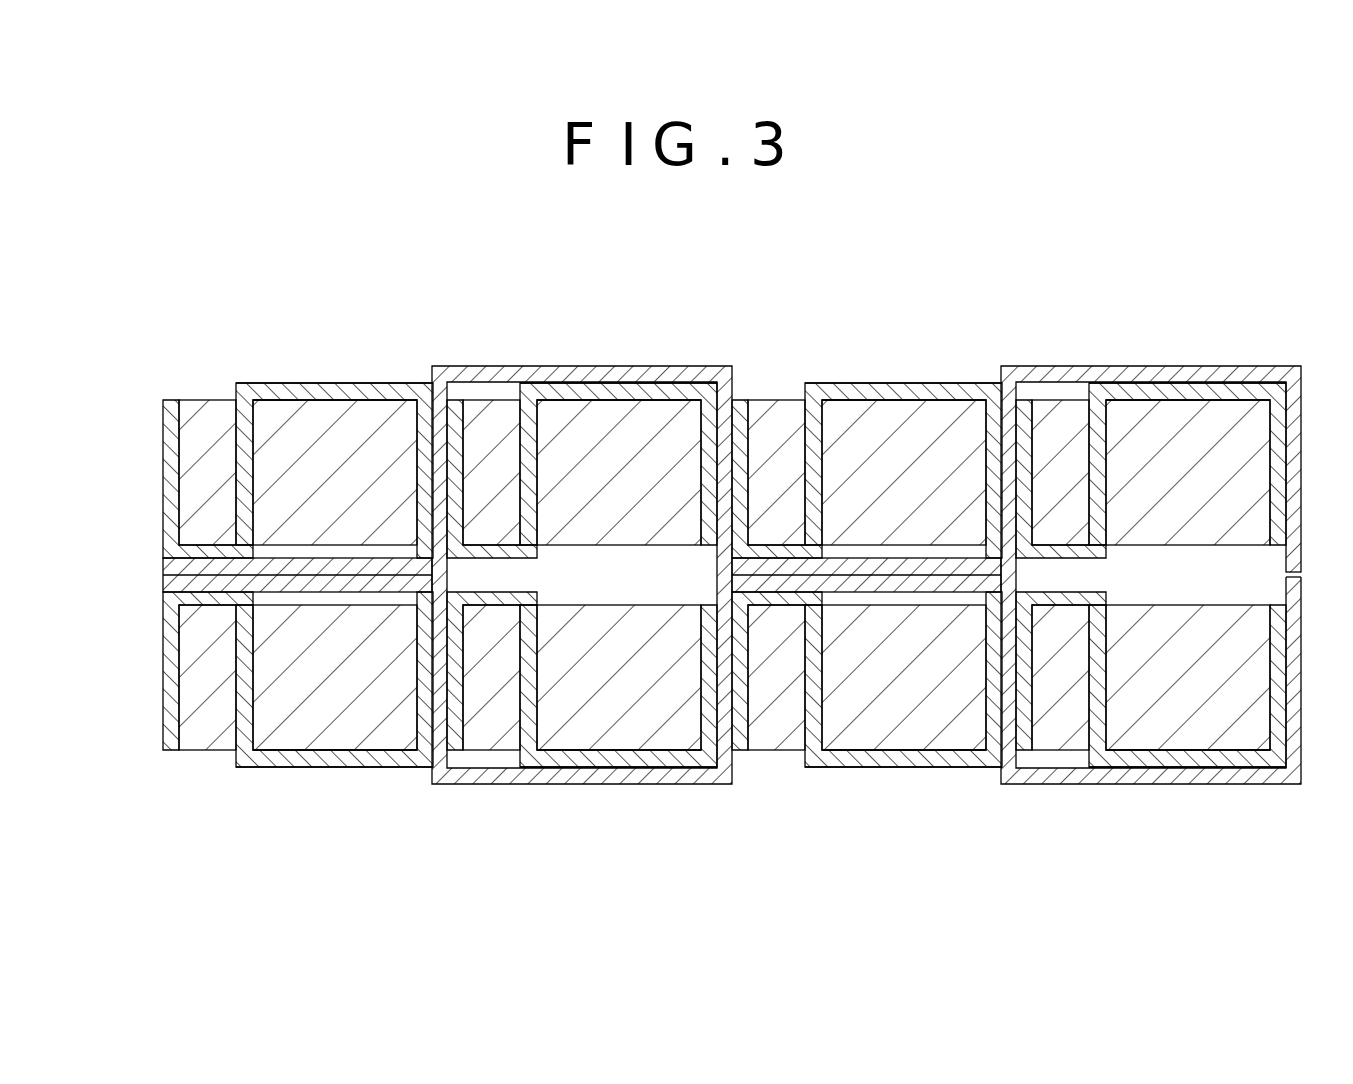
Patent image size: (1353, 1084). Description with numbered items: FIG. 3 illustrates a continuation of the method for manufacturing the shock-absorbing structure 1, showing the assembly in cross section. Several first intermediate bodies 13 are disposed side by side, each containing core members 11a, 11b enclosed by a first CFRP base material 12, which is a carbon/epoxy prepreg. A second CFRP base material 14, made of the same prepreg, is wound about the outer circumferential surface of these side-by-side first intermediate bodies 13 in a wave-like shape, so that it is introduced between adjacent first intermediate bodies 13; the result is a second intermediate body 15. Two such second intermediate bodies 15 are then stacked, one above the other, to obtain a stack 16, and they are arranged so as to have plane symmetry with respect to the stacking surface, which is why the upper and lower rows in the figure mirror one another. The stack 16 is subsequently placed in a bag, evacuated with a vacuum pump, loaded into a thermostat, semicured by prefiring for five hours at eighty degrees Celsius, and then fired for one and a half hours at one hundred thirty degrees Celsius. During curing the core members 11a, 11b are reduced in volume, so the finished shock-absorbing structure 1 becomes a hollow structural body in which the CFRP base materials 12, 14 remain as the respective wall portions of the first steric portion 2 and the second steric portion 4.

The shock-absorbing structure 1 is at (688, 324).
The first steric portion 2 is at (278, 384).
The second steric portion 4 is at (488, 365).
The core member 11a is at (208, 430).
The core member 11b is at (398, 430).
The CFRP base material 12 is at (724, 581).
The first intermediate body 13 is at (337, 372).
The CFRP base material 14 is at (867, 579).
The second intermediate body 15 is at (158, 383).
The stack 16 is at (210, 286).